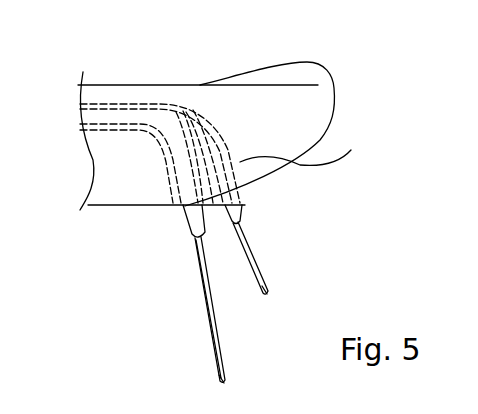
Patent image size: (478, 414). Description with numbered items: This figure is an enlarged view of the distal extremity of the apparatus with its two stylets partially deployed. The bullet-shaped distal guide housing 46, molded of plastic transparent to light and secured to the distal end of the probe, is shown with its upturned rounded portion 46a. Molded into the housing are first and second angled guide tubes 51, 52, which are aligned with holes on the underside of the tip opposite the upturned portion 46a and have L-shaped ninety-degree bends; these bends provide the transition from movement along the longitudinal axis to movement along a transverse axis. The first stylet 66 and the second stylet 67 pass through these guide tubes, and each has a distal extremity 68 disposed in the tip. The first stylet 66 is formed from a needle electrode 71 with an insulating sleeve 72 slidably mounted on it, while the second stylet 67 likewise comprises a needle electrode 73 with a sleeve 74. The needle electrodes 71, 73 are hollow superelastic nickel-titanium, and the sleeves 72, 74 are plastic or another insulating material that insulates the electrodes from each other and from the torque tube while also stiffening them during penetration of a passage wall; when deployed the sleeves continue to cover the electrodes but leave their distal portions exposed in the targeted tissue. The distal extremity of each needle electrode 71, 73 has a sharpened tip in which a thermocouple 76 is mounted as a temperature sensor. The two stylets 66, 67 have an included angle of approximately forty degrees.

The distal guide housing 46 is at (157, 84).
The upturned rounded portion 46a is at (311, 100).
The second angled guide tube 52 is at (192, 111).
The first angled guide tube 51 is at (171, 171).
The distal extremity 68 is at (271, 157).
The second stylet 67 is at (170, 179).
The sleeve 72 is at (188, 234).
The sleeve 74 is at (241, 208).
The needle electrode 71 is at (213, 347).
The needle electrode 73 is at (243, 253).
The thermocouple 76 is at (225, 382).
The first stylet 66 is at (184, 289).